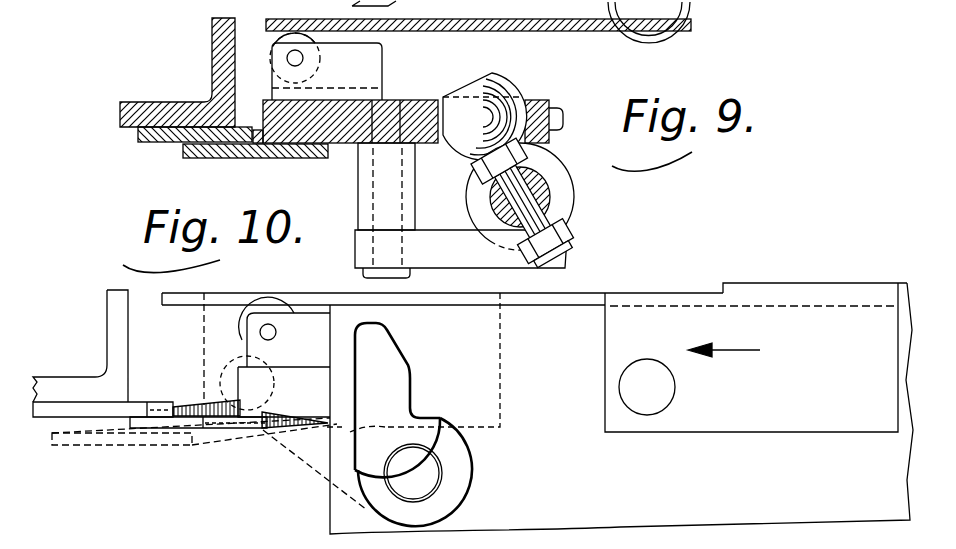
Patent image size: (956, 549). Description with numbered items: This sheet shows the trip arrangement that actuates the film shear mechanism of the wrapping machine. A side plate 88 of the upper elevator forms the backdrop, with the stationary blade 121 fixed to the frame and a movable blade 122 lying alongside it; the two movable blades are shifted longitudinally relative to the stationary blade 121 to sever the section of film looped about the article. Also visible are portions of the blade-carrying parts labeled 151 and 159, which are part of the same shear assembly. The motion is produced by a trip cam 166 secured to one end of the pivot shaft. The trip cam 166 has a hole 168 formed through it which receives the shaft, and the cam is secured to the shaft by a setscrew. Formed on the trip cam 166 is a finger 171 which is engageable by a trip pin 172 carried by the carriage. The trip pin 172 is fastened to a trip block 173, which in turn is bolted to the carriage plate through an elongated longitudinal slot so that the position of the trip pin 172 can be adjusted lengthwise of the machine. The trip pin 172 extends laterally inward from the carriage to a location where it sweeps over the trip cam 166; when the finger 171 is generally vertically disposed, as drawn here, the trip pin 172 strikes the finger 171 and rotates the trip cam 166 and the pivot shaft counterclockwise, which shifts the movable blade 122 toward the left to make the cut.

In FIG. 10, the side plate 88 is at (757, 489).
In FIG. 9, the stationary blade 121 is at (153, 142).
In FIG. 10, the stationary blade 121 is at (50, 407).
In FIG. 9, the movable blade 122 is at (273, 158).
In FIG. 10, the movable blade 122 is at (260, 428).
In FIG. 9, the member 151 is at (566, 6).
In FIG. 9, the member 159 is at (455, 2).
In FIG. 10, the trip cam 166 is at (477, 462).
In FIG. 10, the hole 168 is at (432, 486).
In FIG. 10, the finger 171 is at (398, 383).
In FIG. 10, the trip pin 172 is at (273, 392).
In FIG. 10, the trip block 173 is at (500, 379).